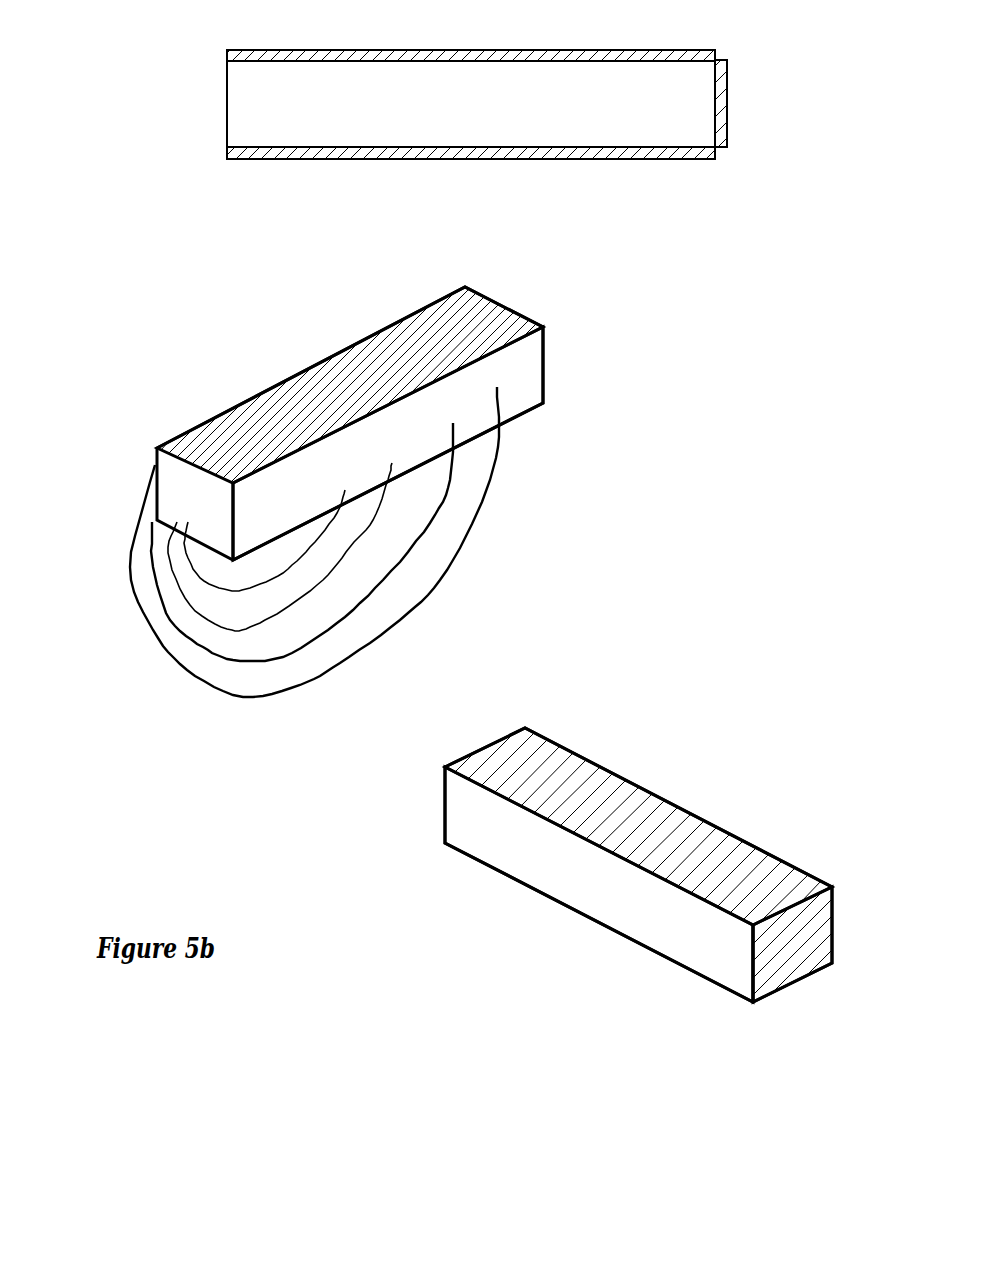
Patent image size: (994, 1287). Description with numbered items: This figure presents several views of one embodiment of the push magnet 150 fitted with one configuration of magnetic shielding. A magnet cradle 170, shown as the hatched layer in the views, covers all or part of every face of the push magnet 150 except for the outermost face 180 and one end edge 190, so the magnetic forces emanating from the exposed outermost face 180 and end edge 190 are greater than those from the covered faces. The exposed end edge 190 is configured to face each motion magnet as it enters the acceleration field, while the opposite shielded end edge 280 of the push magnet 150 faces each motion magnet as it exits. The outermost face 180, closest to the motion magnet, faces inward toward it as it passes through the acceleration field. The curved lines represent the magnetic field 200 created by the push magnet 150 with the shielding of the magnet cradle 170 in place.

The push magnet 150 is at (323, 134).
The magnet cradle 170 is at (494, 532).
The outermost face 180 is at (458, 561).
The end edge 190 is at (268, 542).
The magnetic field 200 is at (353, 542).
The shielded end edge 280 is at (807, 1004).